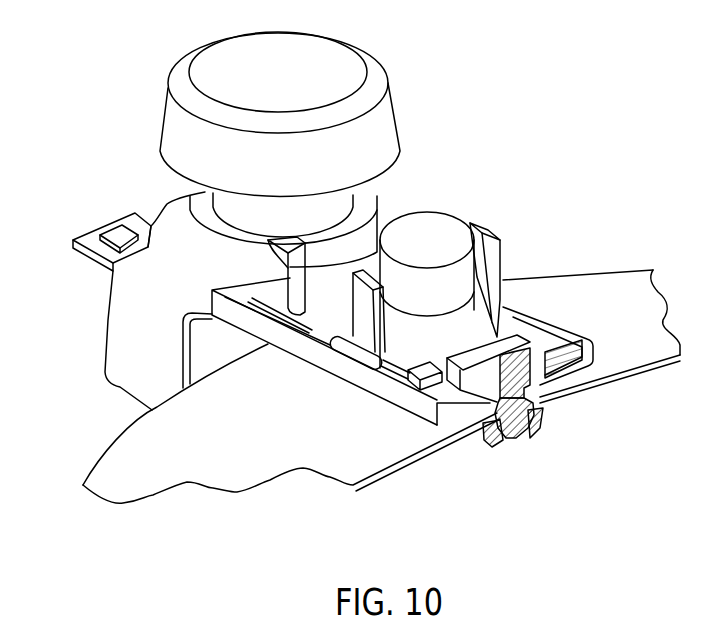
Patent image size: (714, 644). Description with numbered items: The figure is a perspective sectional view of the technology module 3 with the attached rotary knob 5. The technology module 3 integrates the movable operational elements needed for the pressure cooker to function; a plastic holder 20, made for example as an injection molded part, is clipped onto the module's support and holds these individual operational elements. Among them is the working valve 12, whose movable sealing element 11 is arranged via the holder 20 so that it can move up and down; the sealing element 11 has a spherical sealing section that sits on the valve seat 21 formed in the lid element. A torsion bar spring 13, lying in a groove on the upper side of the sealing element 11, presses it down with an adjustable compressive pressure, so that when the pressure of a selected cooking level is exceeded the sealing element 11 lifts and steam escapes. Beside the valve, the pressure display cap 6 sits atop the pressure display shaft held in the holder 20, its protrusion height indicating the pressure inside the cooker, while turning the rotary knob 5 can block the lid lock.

The technology module 3 is at (141, 363).
The rotary knob 5 is at (377, 56).
The pressure display cap 6 is at (447, 213).
The movable sealing element 11 is at (535, 420).
The working valve 12 is at (553, 412).
The torsion bar spring 13 is at (308, 336).
The plastic holder 20 is at (483, 224).
The valve seat 21 is at (508, 440).